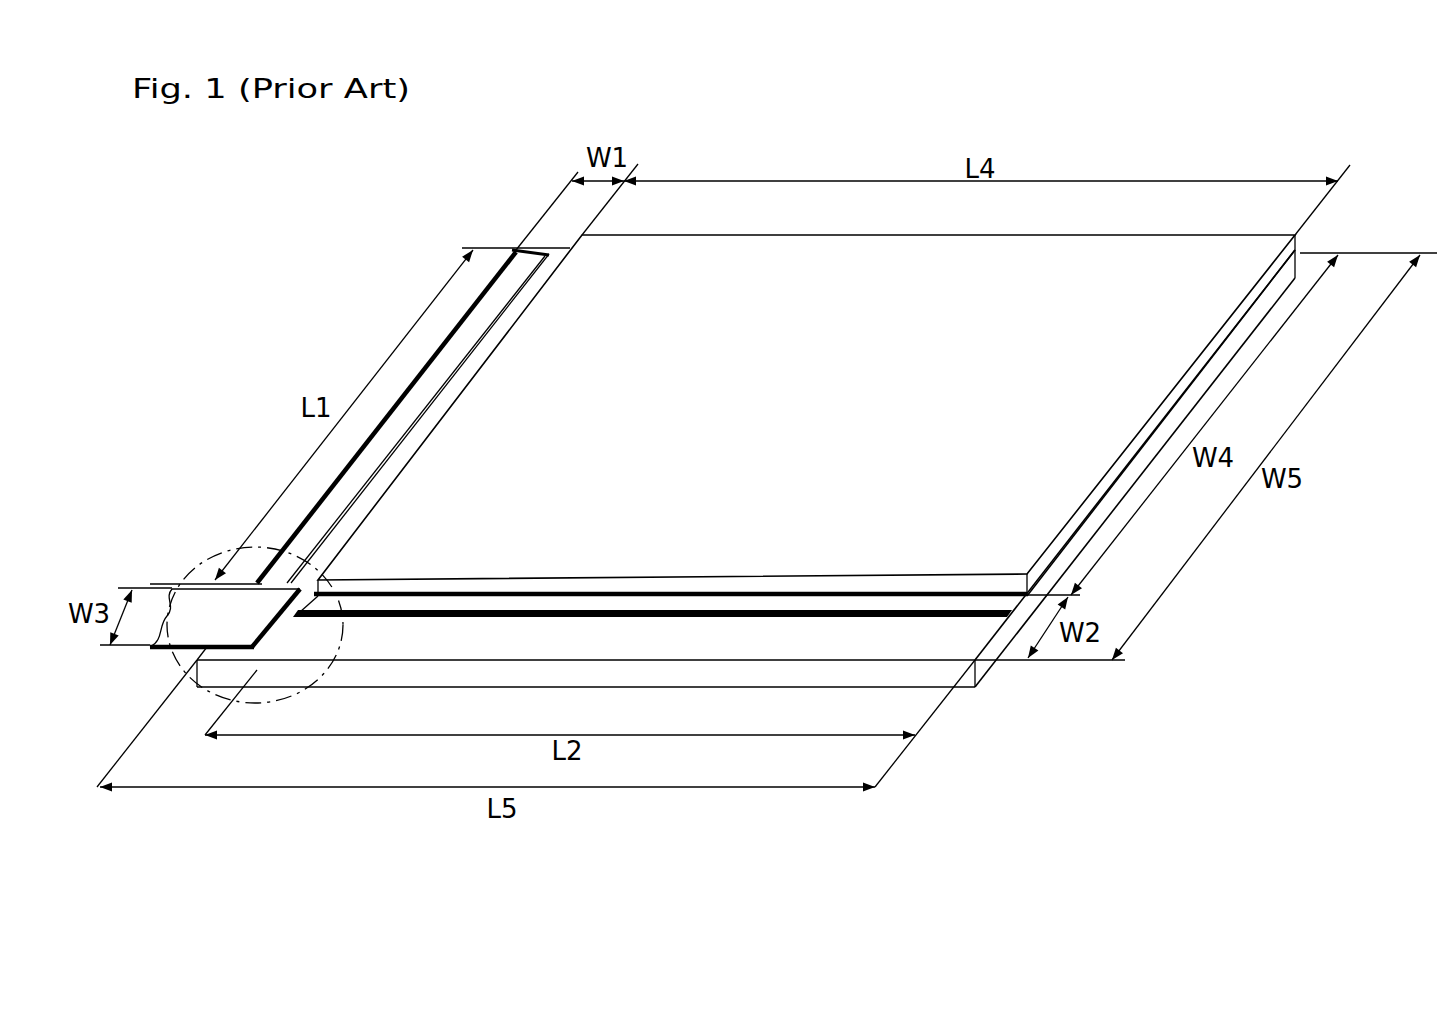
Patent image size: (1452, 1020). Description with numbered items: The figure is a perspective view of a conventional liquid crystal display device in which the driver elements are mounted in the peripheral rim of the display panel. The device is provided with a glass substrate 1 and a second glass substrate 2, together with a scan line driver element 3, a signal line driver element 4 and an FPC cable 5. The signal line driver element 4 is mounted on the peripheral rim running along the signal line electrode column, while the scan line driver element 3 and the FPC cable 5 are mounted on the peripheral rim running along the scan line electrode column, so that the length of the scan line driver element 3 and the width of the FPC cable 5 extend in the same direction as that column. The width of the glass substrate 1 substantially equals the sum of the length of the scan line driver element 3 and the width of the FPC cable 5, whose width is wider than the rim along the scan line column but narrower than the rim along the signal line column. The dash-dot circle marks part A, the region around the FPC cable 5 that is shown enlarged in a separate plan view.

The glass substrate 1 is at (1098, 508).
The glass substrate 2 is at (1067, 537).
The scan line driver element 3 is at (469, 333).
The signal line driver element 4 is at (790, 605).
The FPC cable 5 is at (196, 598).
The part A is at (222, 552).